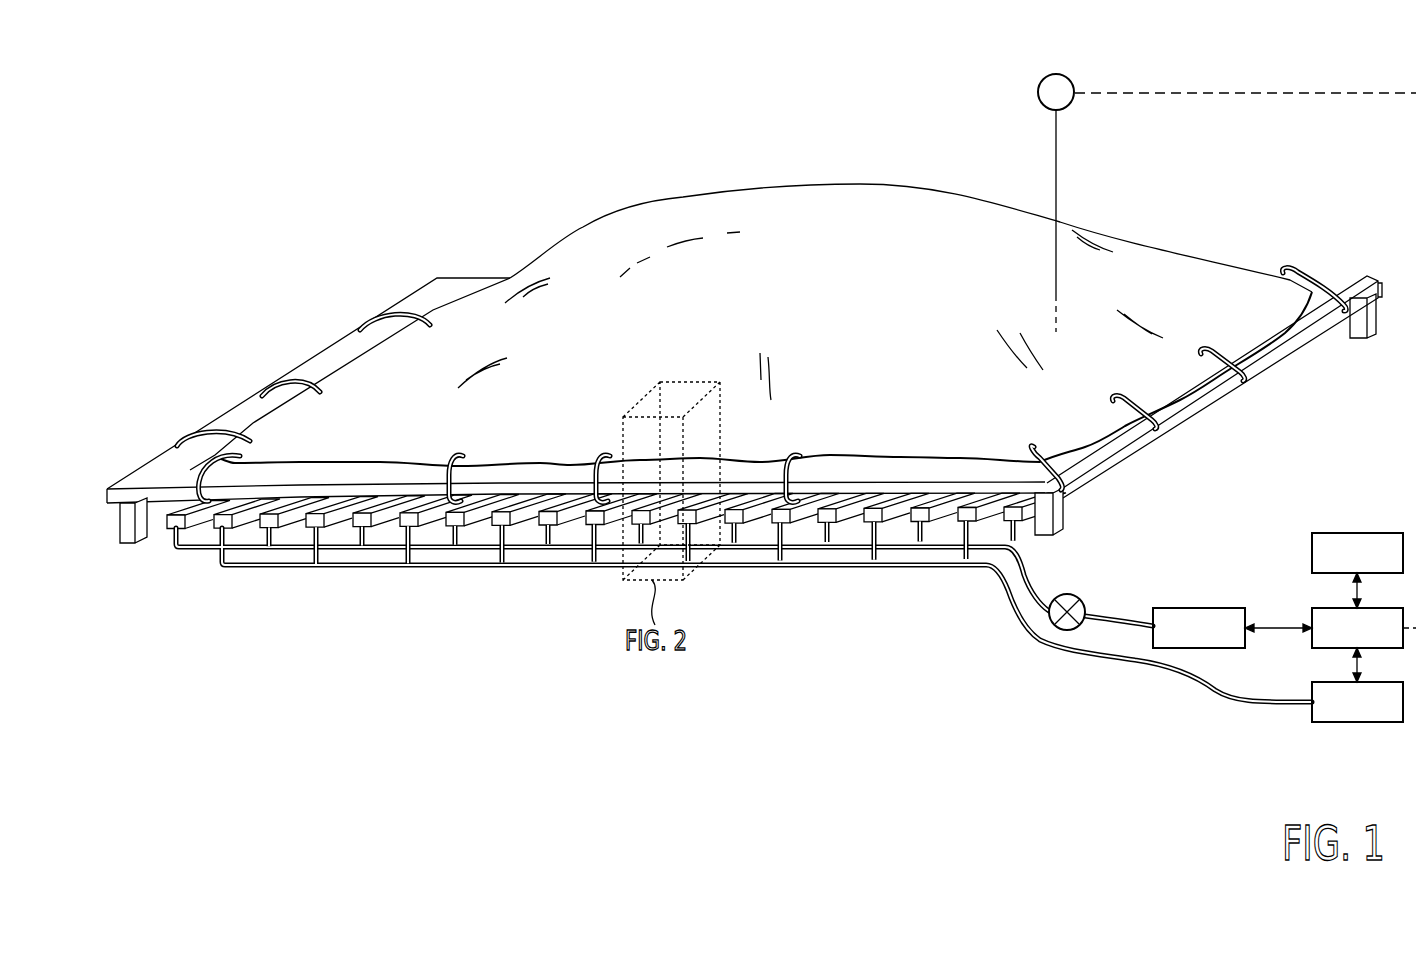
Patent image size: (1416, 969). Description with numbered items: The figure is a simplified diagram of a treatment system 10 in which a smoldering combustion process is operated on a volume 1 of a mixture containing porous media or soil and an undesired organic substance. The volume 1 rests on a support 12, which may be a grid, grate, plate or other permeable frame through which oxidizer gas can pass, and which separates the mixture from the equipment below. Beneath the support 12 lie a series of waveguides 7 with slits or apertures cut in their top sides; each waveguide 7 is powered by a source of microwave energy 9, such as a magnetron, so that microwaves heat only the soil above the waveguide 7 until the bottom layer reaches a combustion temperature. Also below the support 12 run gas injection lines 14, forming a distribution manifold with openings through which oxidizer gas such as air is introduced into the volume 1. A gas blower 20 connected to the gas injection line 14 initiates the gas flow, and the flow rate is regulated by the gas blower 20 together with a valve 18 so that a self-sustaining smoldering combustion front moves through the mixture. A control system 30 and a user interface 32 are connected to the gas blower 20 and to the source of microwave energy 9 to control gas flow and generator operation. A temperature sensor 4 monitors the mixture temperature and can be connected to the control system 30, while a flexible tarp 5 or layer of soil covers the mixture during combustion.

The volume of mixture 1 is at (751, 314).
The temperature sensor 4 is at (1075, 89).
The flexible tarp 5 is at (867, 314).
The waveguide 7 is at (213, 525).
The source of microwave energy 9 is at (1364, 714).
The treatment system 10 is at (723, 597).
The support 12 is at (240, 420).
The gas injection line 14 is at (167, 530).
The valve 18 is at (1086, 609).
The gas blower 20 is at (1212, 640).
The control system 30 is at (1370, 640).
The user interface 32 is at (1370, 566).